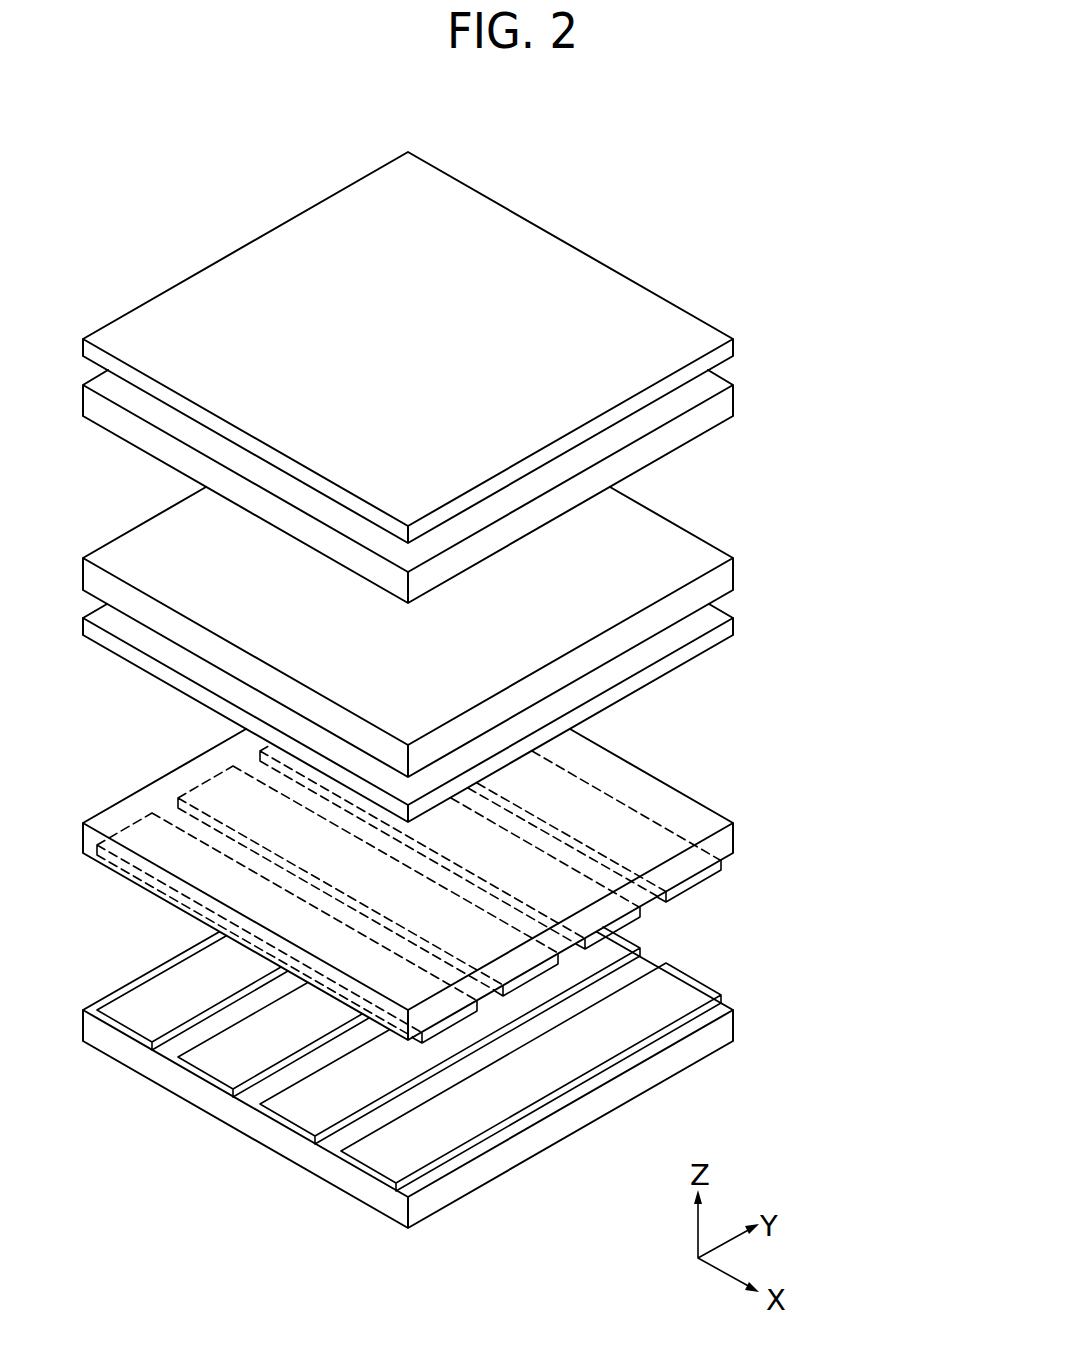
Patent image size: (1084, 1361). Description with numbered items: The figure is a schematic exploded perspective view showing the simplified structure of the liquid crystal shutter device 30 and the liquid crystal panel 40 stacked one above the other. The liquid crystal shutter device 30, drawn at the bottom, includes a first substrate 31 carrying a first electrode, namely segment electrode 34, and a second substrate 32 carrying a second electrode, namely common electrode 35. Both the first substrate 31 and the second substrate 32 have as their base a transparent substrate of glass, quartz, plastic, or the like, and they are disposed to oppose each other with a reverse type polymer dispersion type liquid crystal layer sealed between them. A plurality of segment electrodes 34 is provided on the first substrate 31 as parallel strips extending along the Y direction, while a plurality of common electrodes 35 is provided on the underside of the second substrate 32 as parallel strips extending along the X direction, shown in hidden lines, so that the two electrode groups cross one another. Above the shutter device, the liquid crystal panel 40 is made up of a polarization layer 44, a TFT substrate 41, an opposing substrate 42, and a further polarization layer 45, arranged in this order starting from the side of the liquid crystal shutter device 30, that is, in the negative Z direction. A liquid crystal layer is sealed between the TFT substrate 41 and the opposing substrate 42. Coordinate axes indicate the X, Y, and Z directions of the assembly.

The polarization layer 45 is at (732, 349).
The opposing substrate 42 is at (729, 403).
The TFT substrate 41 is at (729, 575).
The polarization layer 44 is at (467, 713).
The liquid crystal panel 40 is at (513, 487).
The second substrate 32 is at (723, 842).
The second electrode (common electrode) 35 is at (697, 885).
The first electrode (segment electrode) 34 is at (678, 997).
The first substrate 31 is at (459, 1080).
The liquid crystal shutter device 30 is at (495, 978).